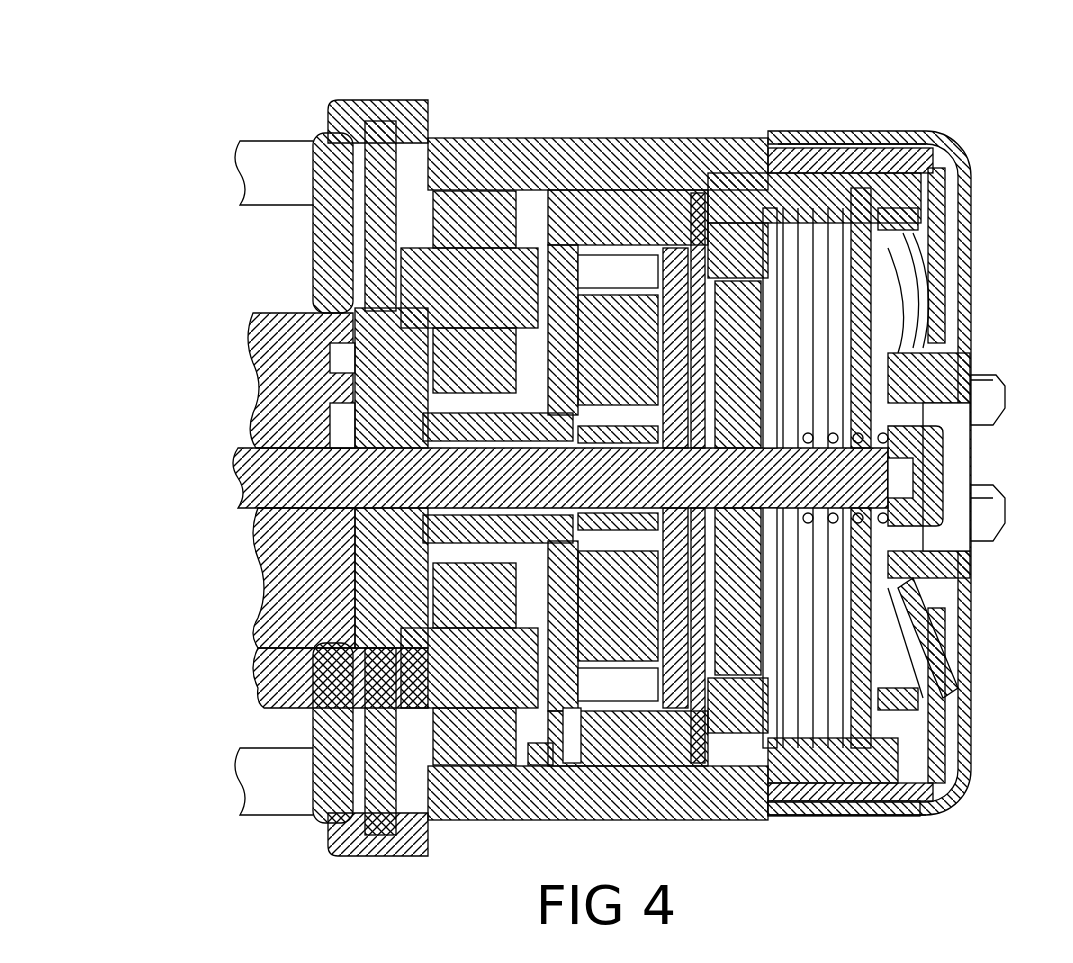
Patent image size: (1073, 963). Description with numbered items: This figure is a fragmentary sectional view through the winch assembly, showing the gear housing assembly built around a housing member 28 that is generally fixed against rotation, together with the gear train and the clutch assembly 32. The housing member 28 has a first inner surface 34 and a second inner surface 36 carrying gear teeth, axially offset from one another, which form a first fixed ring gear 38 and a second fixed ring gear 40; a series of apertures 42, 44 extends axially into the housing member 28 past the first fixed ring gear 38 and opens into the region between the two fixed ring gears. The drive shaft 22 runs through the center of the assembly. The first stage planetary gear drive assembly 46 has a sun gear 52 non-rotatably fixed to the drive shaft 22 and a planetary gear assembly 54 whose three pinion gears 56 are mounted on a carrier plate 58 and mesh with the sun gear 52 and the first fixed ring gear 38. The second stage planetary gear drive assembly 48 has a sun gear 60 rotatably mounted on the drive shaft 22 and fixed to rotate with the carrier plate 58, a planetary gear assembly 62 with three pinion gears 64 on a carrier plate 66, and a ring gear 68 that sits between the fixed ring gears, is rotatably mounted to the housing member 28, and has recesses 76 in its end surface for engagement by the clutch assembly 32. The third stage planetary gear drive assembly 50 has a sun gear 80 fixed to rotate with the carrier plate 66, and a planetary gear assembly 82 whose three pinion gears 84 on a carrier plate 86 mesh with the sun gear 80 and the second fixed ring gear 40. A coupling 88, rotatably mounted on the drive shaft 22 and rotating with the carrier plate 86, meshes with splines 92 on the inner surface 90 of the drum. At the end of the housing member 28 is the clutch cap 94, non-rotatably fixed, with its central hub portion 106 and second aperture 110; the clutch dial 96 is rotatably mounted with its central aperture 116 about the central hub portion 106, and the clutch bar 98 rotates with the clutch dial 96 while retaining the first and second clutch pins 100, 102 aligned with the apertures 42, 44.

The drive shaft 22 is at (322, 430).
The housing member 28 is at (470, 225).
The clutch assembly 32 is at (975, 156).
The first inner surface 34 is at (740, 265).
The second inner surface 36 is at (305, 220).
The first fixed ring gear 38 is at (780, 200).
The second fixed ring gear 40 is at (395, 215).
The aperture 42 is at (700, 250).
The aperture 44 is at (687, 735).
The first stage planetary gear drive assembly 46 is at (745, 600).
The second stage planetary gear drive assembly 48 is at (648, 240).
The third stage planetary gear drive assembly 50 is at (425, 825).
The sun gear 52 is at (860, 298).
The planetary gear assembly 54 is at (870, 253).
The pinion gear 56 is at (880, 213).
The carrier plate 58 is at (700, 700).
The sun gear 60 is at (665, 235).
The planetary gear assembly 62 is at (605, 250).
The pinion gear 64 is at (470, 180).
The carrier plate 66 is at (535, 800).
The ring gear 68 is at (585, 760).
The recess 76 is at (658, 740).
The sun gear 80 is at (440, 505).
The planetary gear assembly 82 is at (470, 170).
The pinion gear 84 is at (270, 310).
The carrier plate 86 is at (300, 575).
The coupling 88 is at (355, 540).
The inner surface 90 is at (330, 400).
The spline 92 is at (340, 350).
The clutch cap 94 is at (868, 775).
The clutch dial 96 is at (975, 738).
The clutch bar 98 is at (935, 658).
The first clutch pin 100 is at (790, 745).
The second clutch pin 102 is at (930, 126).
The central hub portion 106 is at (890, 433).
The second aperture 110 is at (860, 140).
The central aperture 116 is at (963, 395).